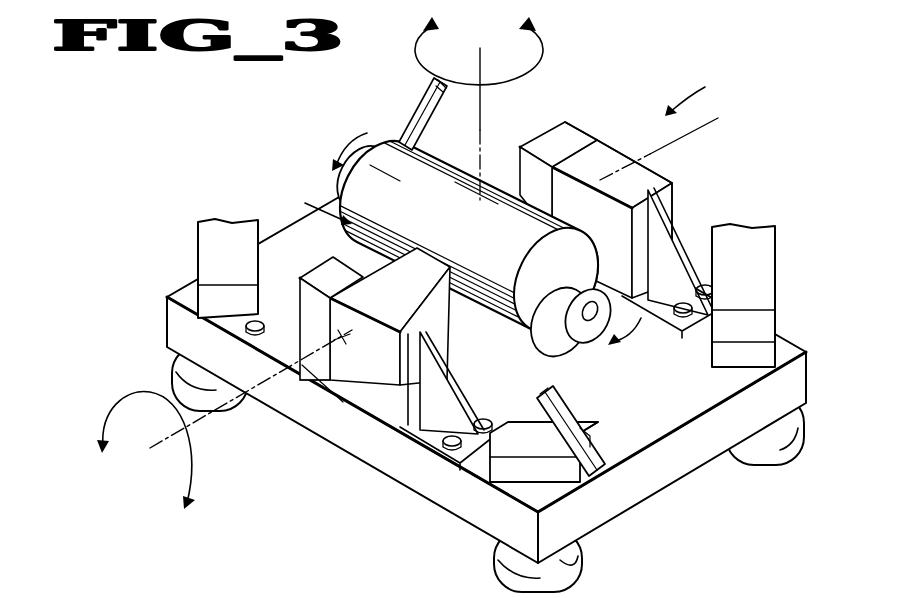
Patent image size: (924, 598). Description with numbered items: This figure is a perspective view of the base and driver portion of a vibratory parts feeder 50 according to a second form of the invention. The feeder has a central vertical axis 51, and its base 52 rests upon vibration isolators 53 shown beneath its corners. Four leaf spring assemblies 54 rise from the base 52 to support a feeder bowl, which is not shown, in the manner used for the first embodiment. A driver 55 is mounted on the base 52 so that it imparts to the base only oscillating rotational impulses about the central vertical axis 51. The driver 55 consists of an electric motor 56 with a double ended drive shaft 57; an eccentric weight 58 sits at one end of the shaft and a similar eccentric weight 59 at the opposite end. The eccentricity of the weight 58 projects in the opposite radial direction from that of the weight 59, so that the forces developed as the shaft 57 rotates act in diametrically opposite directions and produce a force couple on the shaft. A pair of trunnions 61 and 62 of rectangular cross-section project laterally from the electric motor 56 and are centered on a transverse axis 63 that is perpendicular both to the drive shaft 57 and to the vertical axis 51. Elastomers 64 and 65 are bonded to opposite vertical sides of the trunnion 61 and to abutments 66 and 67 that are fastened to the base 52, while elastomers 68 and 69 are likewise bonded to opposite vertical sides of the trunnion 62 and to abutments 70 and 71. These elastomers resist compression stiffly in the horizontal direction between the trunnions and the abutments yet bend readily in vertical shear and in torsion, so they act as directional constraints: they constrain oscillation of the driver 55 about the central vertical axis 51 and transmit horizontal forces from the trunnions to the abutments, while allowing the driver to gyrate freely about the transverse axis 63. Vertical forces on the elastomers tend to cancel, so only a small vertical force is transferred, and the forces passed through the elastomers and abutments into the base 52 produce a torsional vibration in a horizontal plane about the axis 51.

The vibratory parts feeder 50 is at (706, 92).
The central vertical axis 51 is at (488, 70).
The base 52 is at (651, 493).
The vibration isolators 53 is at (191, 384).
The leaf spring assemblies 54 is at (228, 243).
The driver 55 is at (311, 206).
The electric motor 56 is at (512, 240).
The double ended drive shaft 57 is at (592, 313).
The eccentric weight 58 is at (380, 137).
The eccentric weight 59 is at (572, 358).
The trunnion 61 is at (323, 377).
The trunnion 62 is at (617, 160).
The transverse axis 63 is at (200, 420).
The elastomer 64 is at (342, 255).
The elastomer 65 is at (380, 372).
The abutment 66 is at (294, 281).
The abutment 67 is at (447, 350).
The elastomer 68 is at (590, 146).
The elastomer 69 is at (658, 181).
The abutment 70 is at (549, 130).
The abutment 71 is at (668, 203).